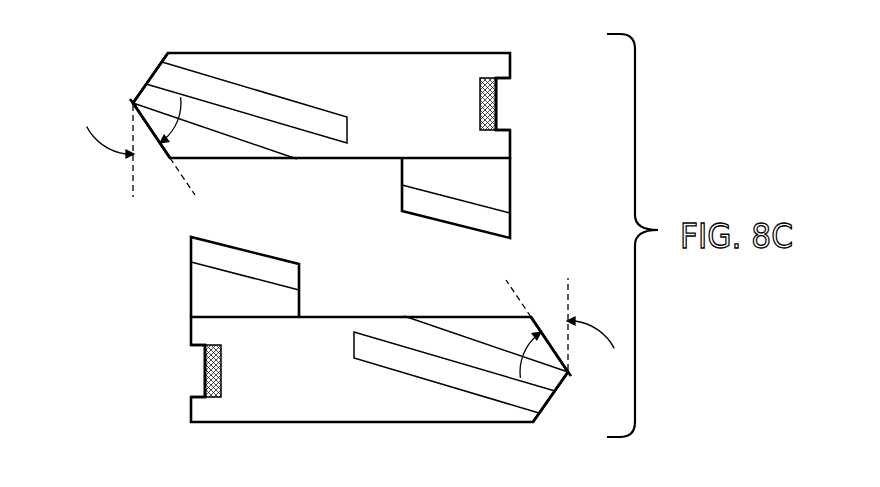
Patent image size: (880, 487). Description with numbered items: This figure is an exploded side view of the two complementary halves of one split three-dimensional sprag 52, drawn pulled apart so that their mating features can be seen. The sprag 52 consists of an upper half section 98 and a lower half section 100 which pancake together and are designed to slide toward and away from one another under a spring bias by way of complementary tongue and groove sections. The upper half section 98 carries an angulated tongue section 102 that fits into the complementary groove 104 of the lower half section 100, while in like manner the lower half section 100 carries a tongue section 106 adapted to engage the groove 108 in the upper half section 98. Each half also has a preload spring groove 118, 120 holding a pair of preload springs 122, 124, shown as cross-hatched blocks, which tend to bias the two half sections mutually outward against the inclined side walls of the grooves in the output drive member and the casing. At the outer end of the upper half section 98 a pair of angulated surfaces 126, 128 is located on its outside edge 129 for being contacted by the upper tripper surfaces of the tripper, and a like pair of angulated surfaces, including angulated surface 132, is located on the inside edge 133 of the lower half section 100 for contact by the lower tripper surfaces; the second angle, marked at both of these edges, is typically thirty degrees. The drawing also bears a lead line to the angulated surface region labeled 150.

The sprag 52 is at (327, 238).
The upper half section 98 is at (398, 62).
The lower half section 100 is at (268, 410).
The angulated tongue section 102 is at (502, 195).
The groove 104 is at (403, 332).
The tongue section 106 is at (200, 293).
The groove 108 is at (283, 110).
The preload spring groove 118 is at (502, 93).
The preload spring groove 120 is at (193, 357).
The preload spring 122 is at (497, 111).
The preload spring 124 is at (207, 387).
The angulated surface 126 is at (148, 82).
The angulated surface 128 is at (168, 156).
The outside edge 129 is at (131, 104).
The angulated surface 132 is at (555, 392).
The inside edge 133 is at (568, 373).
The chamfer surface of second half 150 is at (531, 317).